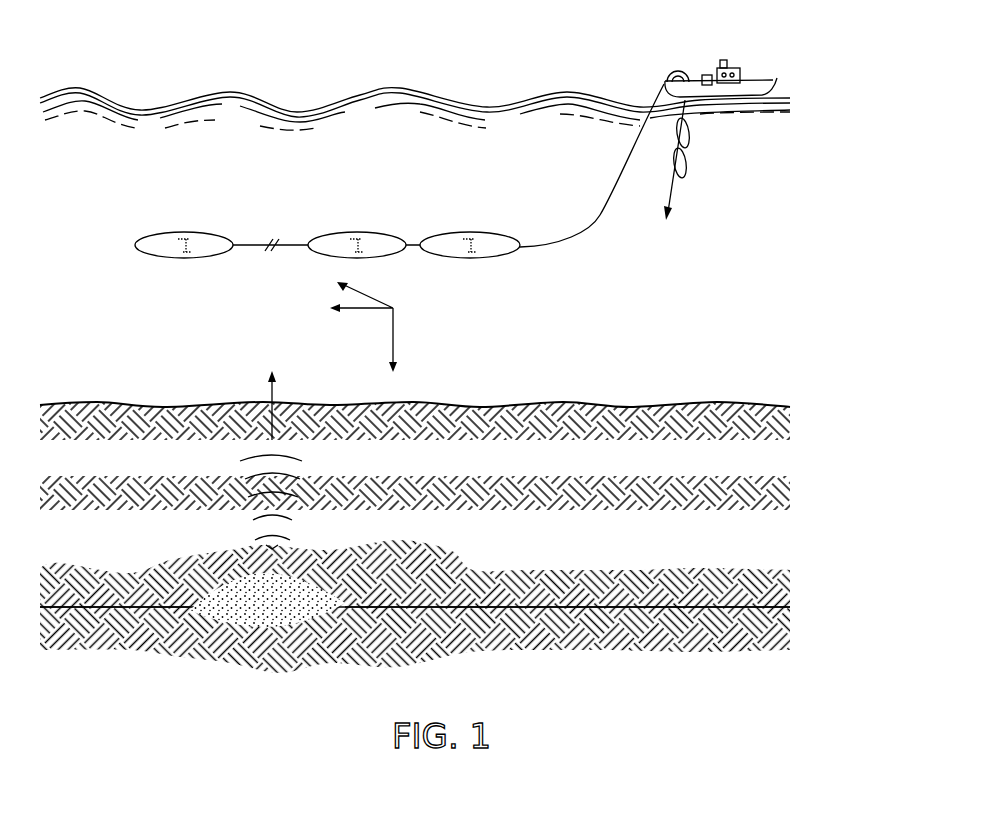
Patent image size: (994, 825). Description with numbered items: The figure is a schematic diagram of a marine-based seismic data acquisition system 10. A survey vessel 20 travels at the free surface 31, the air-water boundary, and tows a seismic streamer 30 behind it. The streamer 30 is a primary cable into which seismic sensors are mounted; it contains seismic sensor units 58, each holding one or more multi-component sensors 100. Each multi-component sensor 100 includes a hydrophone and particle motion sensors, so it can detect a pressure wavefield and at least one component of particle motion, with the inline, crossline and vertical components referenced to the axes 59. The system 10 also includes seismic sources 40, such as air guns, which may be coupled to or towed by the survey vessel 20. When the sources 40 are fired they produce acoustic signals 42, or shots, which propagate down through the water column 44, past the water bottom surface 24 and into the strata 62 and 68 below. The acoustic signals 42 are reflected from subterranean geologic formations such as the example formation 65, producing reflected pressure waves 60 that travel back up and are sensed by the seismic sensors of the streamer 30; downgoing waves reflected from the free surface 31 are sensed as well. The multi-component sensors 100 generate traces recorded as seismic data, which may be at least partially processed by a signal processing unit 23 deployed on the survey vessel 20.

The marine-based seismic data acquisition system 10 is at (215, 58).
The survey vessel 20 is at (762, 80).
The signal processing unit 23 is at (705, 73).
The water bottom surface 24 is at (731, 403).
The seismic streamer 30 is at (628, 168).
The free surface 31 is at (348, 93).
The seismic source 40 is at (689, 130).
The acoustic signal 42 is at (675, 204).
The water column 44 is at (739, 281).
The seismic sensor unit 58 is at (152, 238).
The axes 59 is at (430, 370).
The pressure waves 60 is at (244, 529).
The strata 62 is at (415, 613).
The formation 65 is at (290, 616).
The strata 68 is at (664, 650).
The multi-component sensor 100 is at (482, 242).